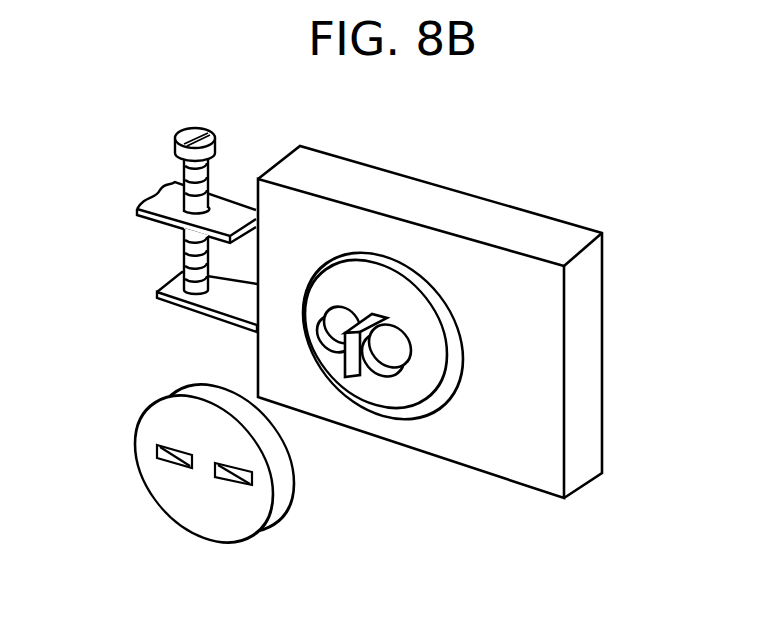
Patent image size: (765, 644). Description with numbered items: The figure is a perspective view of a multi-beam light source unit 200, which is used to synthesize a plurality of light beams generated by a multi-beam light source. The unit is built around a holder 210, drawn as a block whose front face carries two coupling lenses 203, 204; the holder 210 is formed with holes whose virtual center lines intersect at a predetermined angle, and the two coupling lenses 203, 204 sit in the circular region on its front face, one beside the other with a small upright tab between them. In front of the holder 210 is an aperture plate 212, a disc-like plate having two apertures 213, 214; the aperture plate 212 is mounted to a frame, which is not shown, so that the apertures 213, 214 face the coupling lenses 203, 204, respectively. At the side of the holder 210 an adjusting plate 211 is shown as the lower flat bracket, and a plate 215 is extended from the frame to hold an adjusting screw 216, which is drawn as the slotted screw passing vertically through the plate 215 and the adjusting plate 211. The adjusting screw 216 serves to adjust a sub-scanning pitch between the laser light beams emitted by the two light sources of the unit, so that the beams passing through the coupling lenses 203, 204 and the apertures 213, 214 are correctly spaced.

The multi-beam light source unit 200 is at (475, 325).
The holder 210 is at (594, 322).
The coupling lens 203 is at (330, 340).
The coupling lens 204 is at (383, 367).
The adjusting plate 211 is at (165, 288).
The aperture plate 212 is at (173, 485).
The aperture 213 is at (172, 462).
The aperture 214 is at (238, 482).
The plate 215 is at (229, 198).
The adjusting screw 216 is at (137, 209).